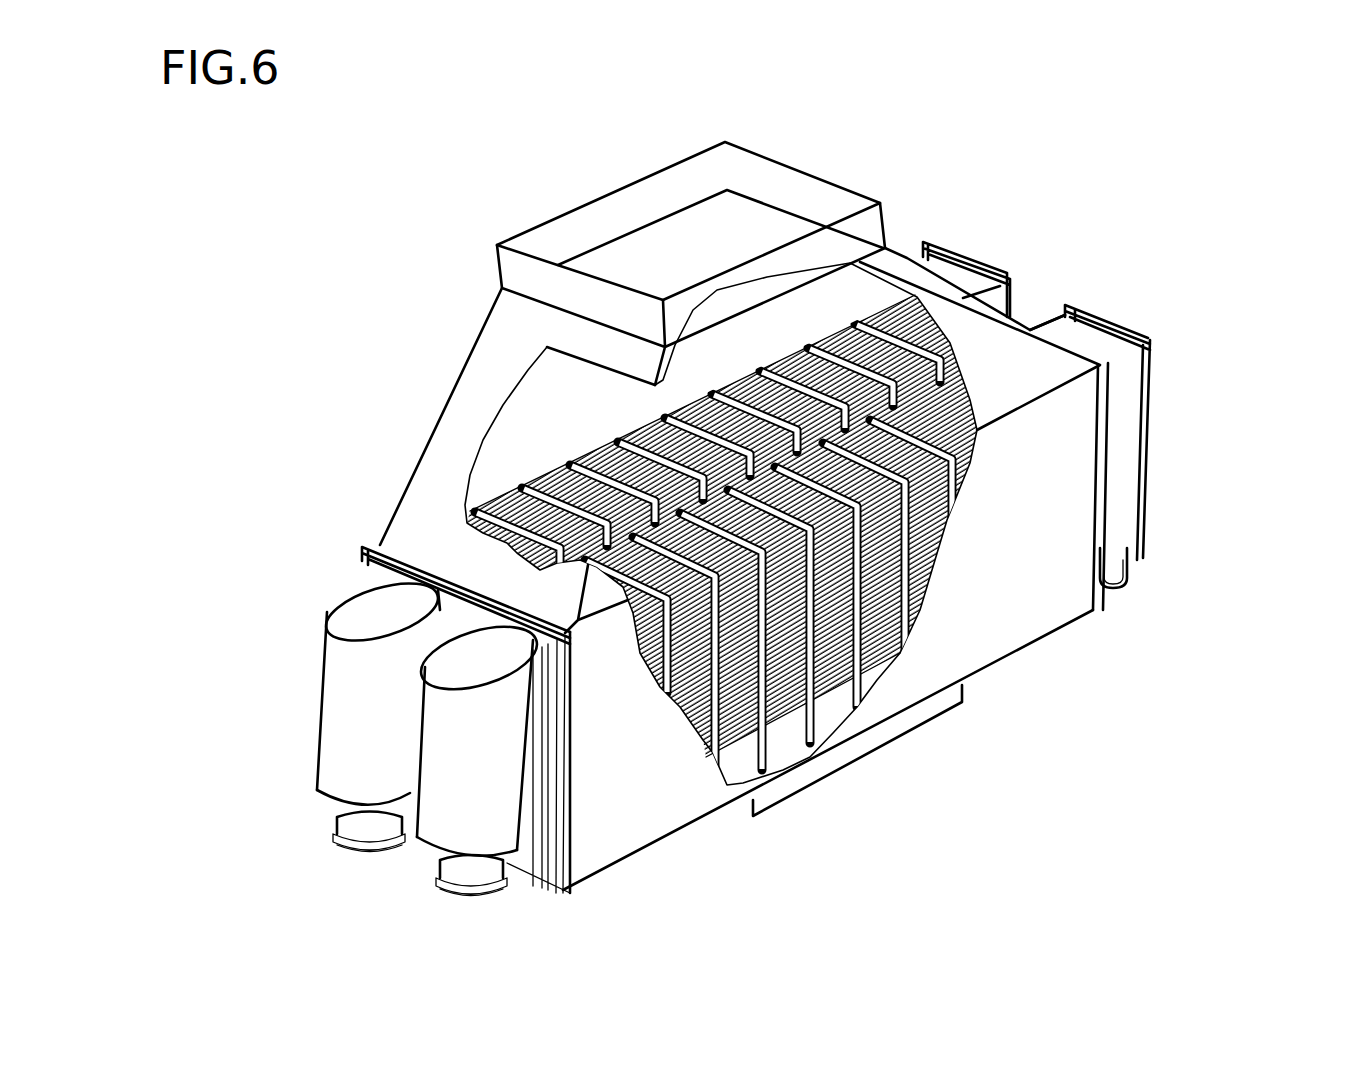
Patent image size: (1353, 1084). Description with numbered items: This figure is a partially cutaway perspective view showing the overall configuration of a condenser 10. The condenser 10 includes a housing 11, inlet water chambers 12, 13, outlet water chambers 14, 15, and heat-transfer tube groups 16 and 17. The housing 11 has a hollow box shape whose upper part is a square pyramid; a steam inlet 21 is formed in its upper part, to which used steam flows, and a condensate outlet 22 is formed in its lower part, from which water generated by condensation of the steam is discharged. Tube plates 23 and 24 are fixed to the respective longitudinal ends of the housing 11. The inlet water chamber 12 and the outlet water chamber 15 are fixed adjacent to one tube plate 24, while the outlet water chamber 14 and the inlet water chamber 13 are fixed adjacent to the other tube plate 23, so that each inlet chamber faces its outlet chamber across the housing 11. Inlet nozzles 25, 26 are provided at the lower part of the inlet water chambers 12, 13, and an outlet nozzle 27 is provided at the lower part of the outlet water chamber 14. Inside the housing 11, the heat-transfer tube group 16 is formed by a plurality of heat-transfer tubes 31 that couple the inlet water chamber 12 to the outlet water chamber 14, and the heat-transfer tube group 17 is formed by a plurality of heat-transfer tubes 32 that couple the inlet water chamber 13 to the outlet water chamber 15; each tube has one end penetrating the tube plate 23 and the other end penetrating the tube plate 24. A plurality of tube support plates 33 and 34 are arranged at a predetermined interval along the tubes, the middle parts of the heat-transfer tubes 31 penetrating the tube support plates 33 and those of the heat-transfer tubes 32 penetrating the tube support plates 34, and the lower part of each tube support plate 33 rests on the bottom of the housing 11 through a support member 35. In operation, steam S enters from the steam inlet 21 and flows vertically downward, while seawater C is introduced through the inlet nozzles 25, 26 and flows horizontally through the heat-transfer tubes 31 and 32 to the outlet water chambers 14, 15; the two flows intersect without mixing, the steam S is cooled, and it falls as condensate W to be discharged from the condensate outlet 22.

The condenser 10 is at (296, 318).
The housing 11 is at (469, 345).
The inlet water chamber 12 is at (1155, 398).
The inlet water chamber 13 is at (317, 647).
The outlet water chamber 14 is at (507, 790).
The outlet water chamber 15 is at (987, 251).
The heat-transfer tube group 16 is at (908, 712).
The heat-transfer tube group 17 is at (880, 350).
The steam inlet 21 is at (645, 250).
The condensate outlet 22 is at (830, 773).
The tube plate 23 is at (566, 790).
The tube plate 24 is at (1085, 355).
The inlet nozzle 25 is at (1127, 562).
The inlet nozzle 26 is at (348, 819).
The outlet nozzle 27 is at (482, 870).
The heat-transfer tube 31 is at (800, 705).
The heat-transfer tube 32 is at (563, 487).
The tube support plate 33 is at (923, 560).
The tube support plate 34 is at (473, 512).
The support member 35 is at (815, 735).
The steam S is at (712, 222).
The seawater C is at (1114, 600).
The condensate W is at (775, 898).